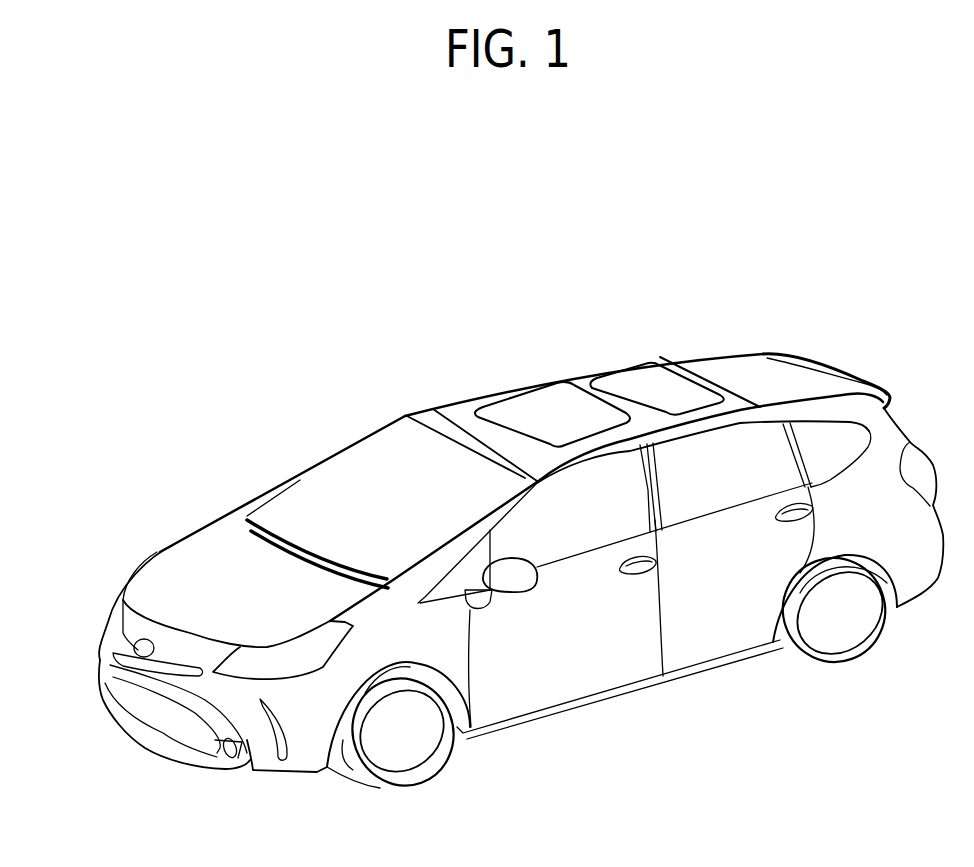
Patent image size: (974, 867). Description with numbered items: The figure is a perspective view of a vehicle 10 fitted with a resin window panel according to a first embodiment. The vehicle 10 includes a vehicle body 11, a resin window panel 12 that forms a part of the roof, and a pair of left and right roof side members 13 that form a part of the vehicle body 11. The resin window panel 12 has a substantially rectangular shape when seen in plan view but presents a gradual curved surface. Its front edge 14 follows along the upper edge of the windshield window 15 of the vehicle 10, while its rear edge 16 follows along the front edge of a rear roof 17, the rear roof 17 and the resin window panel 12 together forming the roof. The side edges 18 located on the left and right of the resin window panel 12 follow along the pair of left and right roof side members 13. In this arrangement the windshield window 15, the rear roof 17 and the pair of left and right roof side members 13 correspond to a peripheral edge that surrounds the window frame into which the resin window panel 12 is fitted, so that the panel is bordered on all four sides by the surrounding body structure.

The vehicle 10 is at (675, 280).
The vehicle body 11 is at (630, 692).
The resin window panel 12 is at (572, 372).
The roof side members 13 is at (676, 430).
The front edge 14 is at (463, 430).
The windshield window 15 is at (330, 507).
The rear edge 16 is at (688, 355).
The rear roof 17 is at (781, 381).
The side edges 18 is at (523, 375).